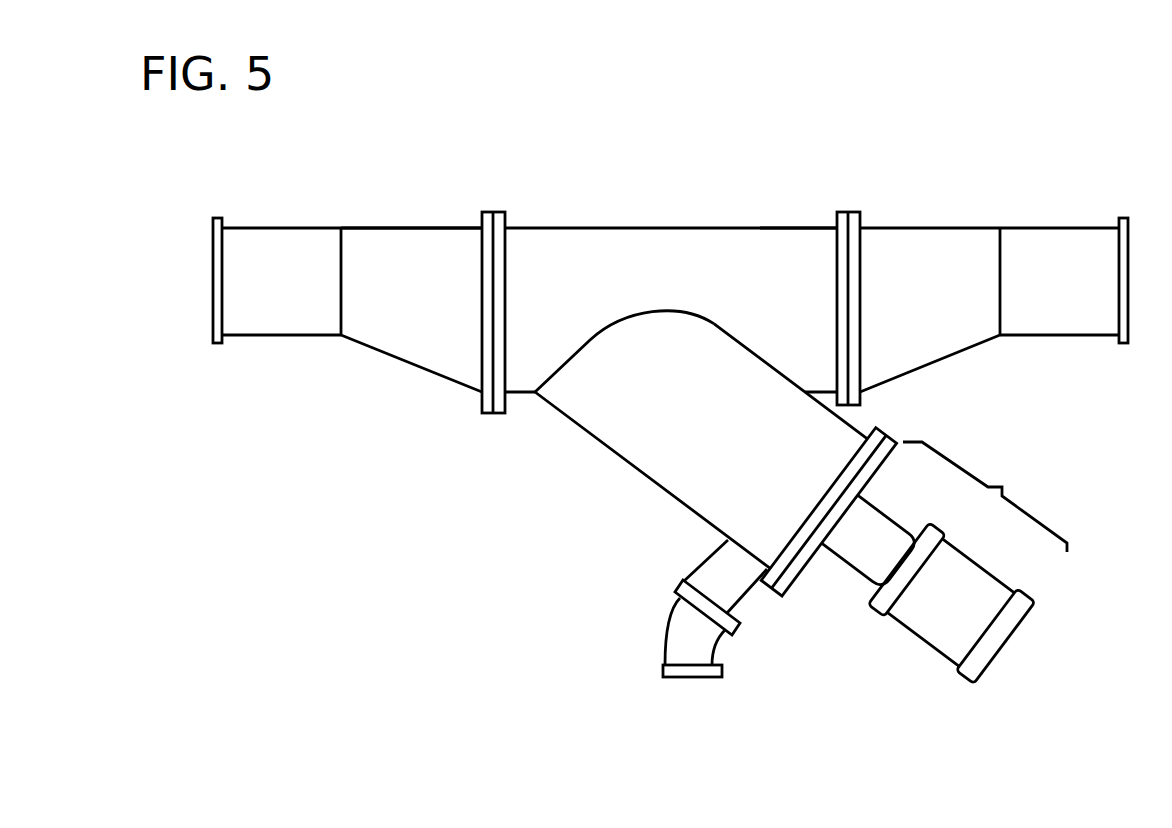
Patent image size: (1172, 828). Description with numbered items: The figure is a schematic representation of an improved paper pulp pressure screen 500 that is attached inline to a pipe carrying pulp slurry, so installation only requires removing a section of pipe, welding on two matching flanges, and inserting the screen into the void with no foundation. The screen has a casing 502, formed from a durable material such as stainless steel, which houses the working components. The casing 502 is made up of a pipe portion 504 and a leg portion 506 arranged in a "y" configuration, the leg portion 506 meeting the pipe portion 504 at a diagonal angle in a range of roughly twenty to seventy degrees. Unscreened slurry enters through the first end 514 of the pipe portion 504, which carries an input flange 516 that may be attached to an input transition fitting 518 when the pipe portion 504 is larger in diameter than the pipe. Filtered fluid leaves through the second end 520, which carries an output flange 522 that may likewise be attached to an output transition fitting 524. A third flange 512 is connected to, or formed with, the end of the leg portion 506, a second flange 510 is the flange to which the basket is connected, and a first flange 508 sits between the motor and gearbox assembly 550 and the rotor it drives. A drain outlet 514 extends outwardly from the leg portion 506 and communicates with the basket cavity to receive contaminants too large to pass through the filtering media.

The improved paper pulp pressure screen 500 is at (378, 605).
The casing 502 is at (563, 417).
The pipe portion 504 is at (662, 242).
The leg portion 506 is at (668, 495).
The first flange 508 is at (902, 440).
The second flange 510 is at (890, 437).
The third flange 512 is at (873, 430).
The first end 514 is at (747, 603).
The input flange 516 is at (495, 212).
The input transition fitting 518 is at (385, 228).
The second end 520 is at (777, 228).
The output flange 522 is at (847, 212).
The output transition fitting 524 is at (930, 228).
The motor and gearbox assembly 550 is at (985, 497).